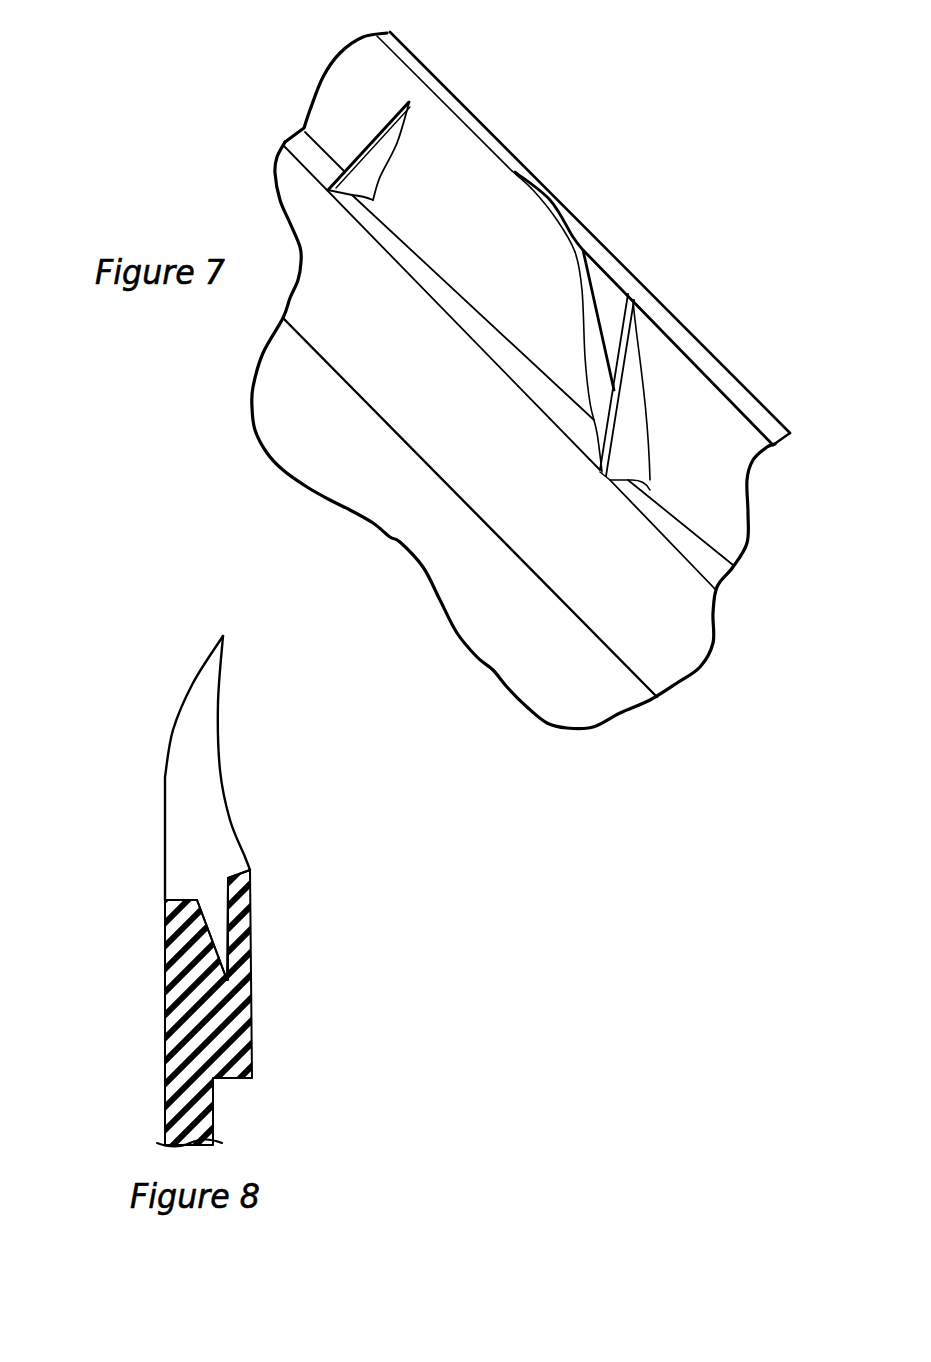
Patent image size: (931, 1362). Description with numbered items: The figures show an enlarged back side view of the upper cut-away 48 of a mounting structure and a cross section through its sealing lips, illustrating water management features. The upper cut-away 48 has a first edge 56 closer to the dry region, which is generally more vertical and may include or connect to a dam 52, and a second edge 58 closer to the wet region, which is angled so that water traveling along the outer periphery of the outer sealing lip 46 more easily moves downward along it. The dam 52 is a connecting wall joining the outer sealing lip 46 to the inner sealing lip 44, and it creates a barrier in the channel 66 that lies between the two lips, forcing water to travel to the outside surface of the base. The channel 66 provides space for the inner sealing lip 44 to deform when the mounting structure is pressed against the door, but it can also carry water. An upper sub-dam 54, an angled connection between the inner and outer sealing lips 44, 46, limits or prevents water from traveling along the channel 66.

In FIG. 7, the inner sealing lip 44 is at (443, 385).
In FIG. 8, the inner sealing lip 44 is at (237, 868).
In FIG. 7, the outer sealing lip 46 is at (471, 215).
In FIG. 8, the outer sealing lip 46 is at (188, 682).
In FIG. 7, the upper cut-away 48 is at (588, 258).
In FIG. 7, the dam 52 is at (630, 423).
In FIG. 8, the dam 52 is at (193, 760).
In FIG. 7, the upper sub-dam 54 is at (377, 164).
In FIG. 7, the first edge 56 is at (618, 354).
In FIG. 7, the second edge 58 is at (610, 305).
In FIG. 7, the channel 66 is at (480, 302).
In FIG. 8, the channel 66 is at (212, 903).